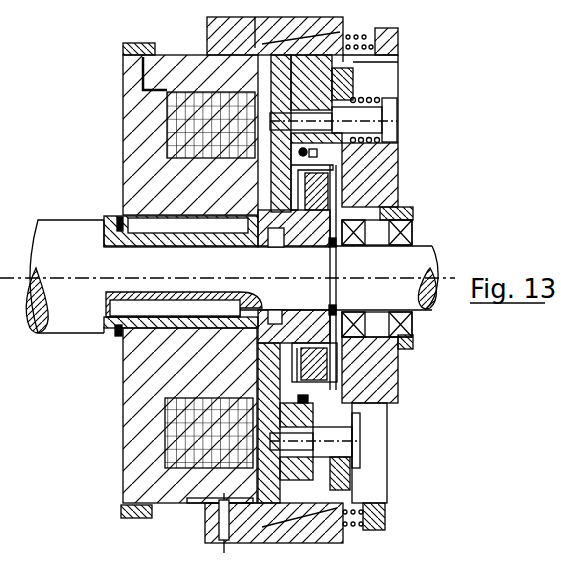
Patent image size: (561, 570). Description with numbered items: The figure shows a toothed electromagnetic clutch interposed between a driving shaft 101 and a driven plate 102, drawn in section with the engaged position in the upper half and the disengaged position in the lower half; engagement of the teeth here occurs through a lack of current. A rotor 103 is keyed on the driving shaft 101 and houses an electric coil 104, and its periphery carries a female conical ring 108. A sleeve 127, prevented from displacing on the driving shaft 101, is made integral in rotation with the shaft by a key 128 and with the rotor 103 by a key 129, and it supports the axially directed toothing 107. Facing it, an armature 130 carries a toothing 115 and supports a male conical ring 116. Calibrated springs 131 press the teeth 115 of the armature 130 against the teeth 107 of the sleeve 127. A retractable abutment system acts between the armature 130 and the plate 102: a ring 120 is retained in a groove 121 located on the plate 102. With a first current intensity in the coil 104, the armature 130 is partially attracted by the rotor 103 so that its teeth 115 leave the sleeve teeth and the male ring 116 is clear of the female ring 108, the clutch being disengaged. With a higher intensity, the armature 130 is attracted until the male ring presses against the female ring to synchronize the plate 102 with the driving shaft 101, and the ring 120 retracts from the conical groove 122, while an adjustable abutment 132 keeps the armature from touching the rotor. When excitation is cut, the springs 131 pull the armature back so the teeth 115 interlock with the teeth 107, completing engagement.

The driving shaft 101 is at (88, 238).
The driven plate 102 is at (383, 197).
The rotor 103 is at (137, 157).
The electric coil 104 is at (200, 112).
The toothing 107 is at (288, 361).
The female conical ring 108 is at (228, 30).
The toothing 115 is at (288, 361).
The male conical ring 116 is at (337, 35).
The ring 120 is at (335, 121).
The groove 121 is at (312, 153).
The conical groove 122 is at (293, 412).
The sleeve 127 is at (323, 231).
The key 128 is at (117, 335).
The key 129 is at (161, 228).
The armature 130 is at (325, 80).
The calibrated springs 131 is at (377, 99).
The adjustable abutment 132 is at (357, 457).